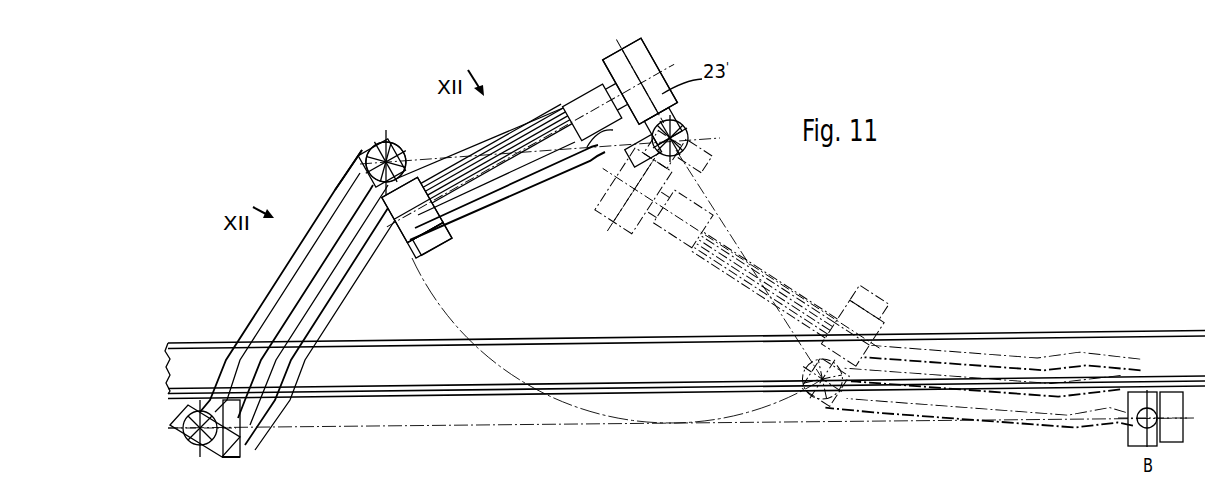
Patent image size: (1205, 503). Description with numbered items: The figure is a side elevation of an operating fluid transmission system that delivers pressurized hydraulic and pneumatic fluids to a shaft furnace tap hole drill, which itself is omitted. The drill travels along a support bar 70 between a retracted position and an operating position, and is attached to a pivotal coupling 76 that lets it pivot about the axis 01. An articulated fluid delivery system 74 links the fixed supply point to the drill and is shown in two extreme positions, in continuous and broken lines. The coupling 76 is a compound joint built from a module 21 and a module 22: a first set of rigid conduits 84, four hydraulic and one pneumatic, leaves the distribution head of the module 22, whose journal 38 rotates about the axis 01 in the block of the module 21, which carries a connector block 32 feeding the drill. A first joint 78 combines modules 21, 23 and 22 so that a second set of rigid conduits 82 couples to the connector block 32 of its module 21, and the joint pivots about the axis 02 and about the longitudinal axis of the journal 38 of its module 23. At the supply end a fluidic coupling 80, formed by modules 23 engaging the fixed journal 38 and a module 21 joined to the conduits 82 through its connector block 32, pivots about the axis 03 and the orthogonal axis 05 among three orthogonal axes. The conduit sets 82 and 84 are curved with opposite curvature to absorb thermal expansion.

The pivot axis 01 is at (190, 445).
The pivot axis 02 is at (420, 154).
The pivot axis 03 is at (688, 117).
The orthogonal pivot axis 05 is at (606, 79).
The module 21 is at (626, 143).
The module 22 is at (392, 143).
The module 23 is at (404, 167).
The connector block 32 is at (406, 233).
The journal 38 is at (690, 140).
The support bar 70 is at (597, 352).
The articulated fluid delivery system 74 is at (484, 240).
The pivotal coupling 76 is at (232, 458).
The first joint 78 is at (352, 163).
The fluidic coupling 80 is at (662, 62).
The second set of rigid conduits 82 is at (531, 190).
The first set of rigid conduits 84 is at (268, 292).